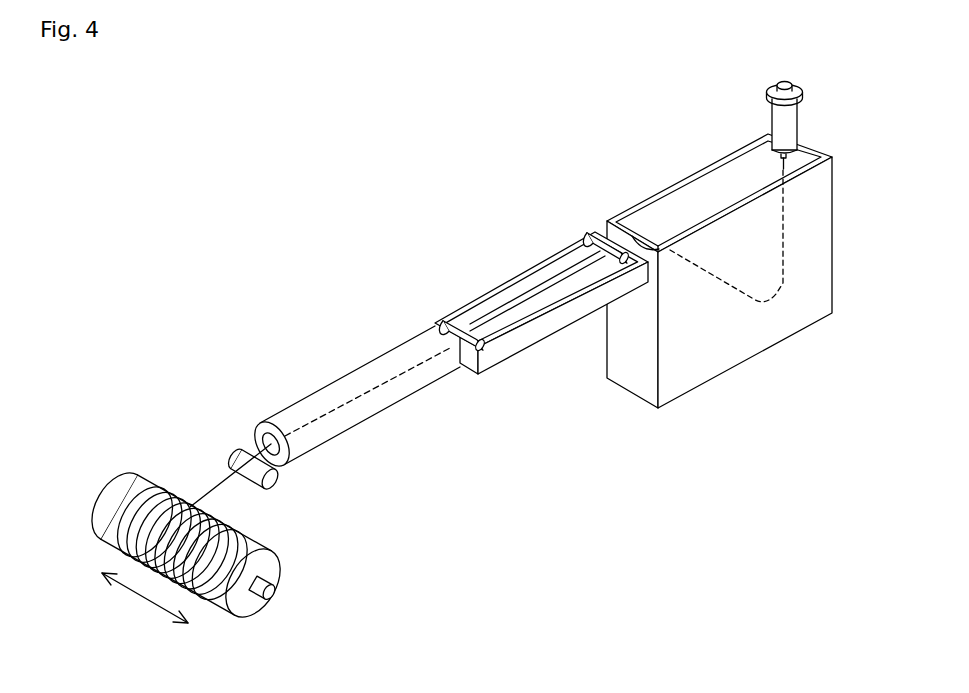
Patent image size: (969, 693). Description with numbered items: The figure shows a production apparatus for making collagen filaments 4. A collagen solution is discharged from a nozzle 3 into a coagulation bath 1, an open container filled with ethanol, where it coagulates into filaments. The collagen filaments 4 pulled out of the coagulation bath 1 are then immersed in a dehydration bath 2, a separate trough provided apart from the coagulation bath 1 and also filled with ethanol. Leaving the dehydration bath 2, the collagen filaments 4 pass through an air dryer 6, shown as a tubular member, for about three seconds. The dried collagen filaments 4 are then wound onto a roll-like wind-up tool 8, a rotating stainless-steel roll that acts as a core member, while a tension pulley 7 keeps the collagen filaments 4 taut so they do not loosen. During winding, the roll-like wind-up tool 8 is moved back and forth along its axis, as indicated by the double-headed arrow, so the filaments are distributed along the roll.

The coagulation bath 1 is at (658, 194).
The dehydration bath 2 is at (546, 288).
The nozzle 3 is at (818, 153).
The collagen filaments 4 is at (160, 491).
The air dryer 6 is at (374, 368).
The tension pulley 7 is at (238, 452).
The roll-like wind-up tool 8 is at (113, 485).